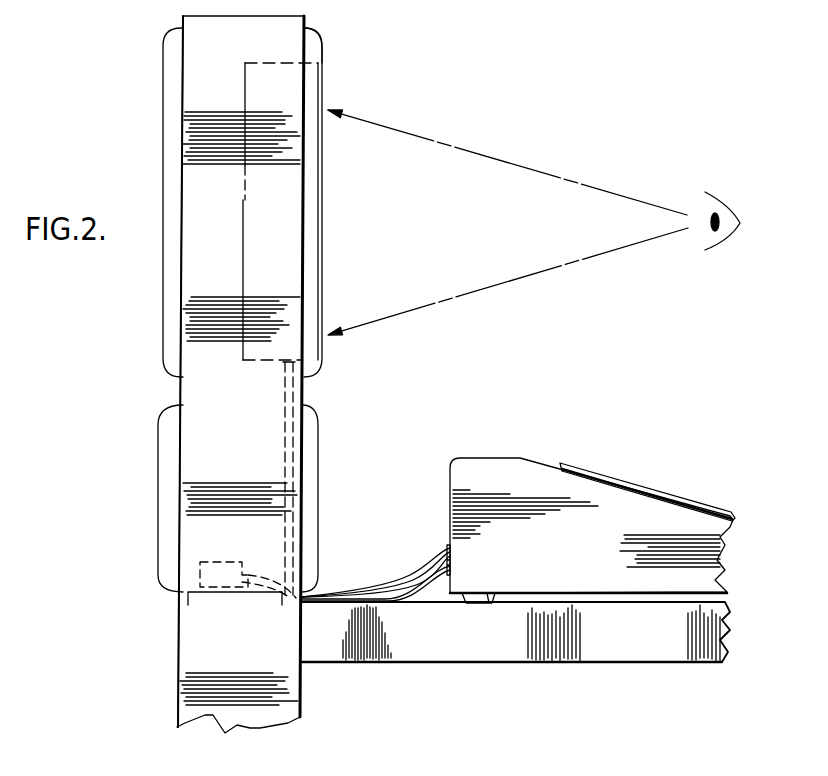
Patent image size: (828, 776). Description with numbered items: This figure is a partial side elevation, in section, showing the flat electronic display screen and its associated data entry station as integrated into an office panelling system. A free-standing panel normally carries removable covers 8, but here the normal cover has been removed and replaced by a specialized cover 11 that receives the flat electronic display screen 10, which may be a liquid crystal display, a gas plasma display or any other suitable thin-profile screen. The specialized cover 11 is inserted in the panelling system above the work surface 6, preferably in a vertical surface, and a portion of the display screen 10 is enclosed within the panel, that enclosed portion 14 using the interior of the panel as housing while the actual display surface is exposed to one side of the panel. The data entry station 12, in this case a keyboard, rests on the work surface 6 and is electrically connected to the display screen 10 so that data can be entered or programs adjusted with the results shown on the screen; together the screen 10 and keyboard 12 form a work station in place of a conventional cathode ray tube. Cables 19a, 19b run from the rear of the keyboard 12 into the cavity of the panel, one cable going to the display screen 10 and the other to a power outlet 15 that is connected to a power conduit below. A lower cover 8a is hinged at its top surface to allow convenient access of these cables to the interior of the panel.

The removable cover 8 is at (165, 138).
The cover 8a is at (310, 485).
The flat electronic display screen 10 is at (323, 210).
The specialized cover 11 is at (316, 46).
The data entry station 12 is at (620, 505).
The enclosed portion 14 is at (263, 222).
The power outlet 15 is at (200, 601).
The upper wires 19a is at (375, 590).
The lower wires 19b is at (400, 592).
The work surface 6 is at (597, 603).